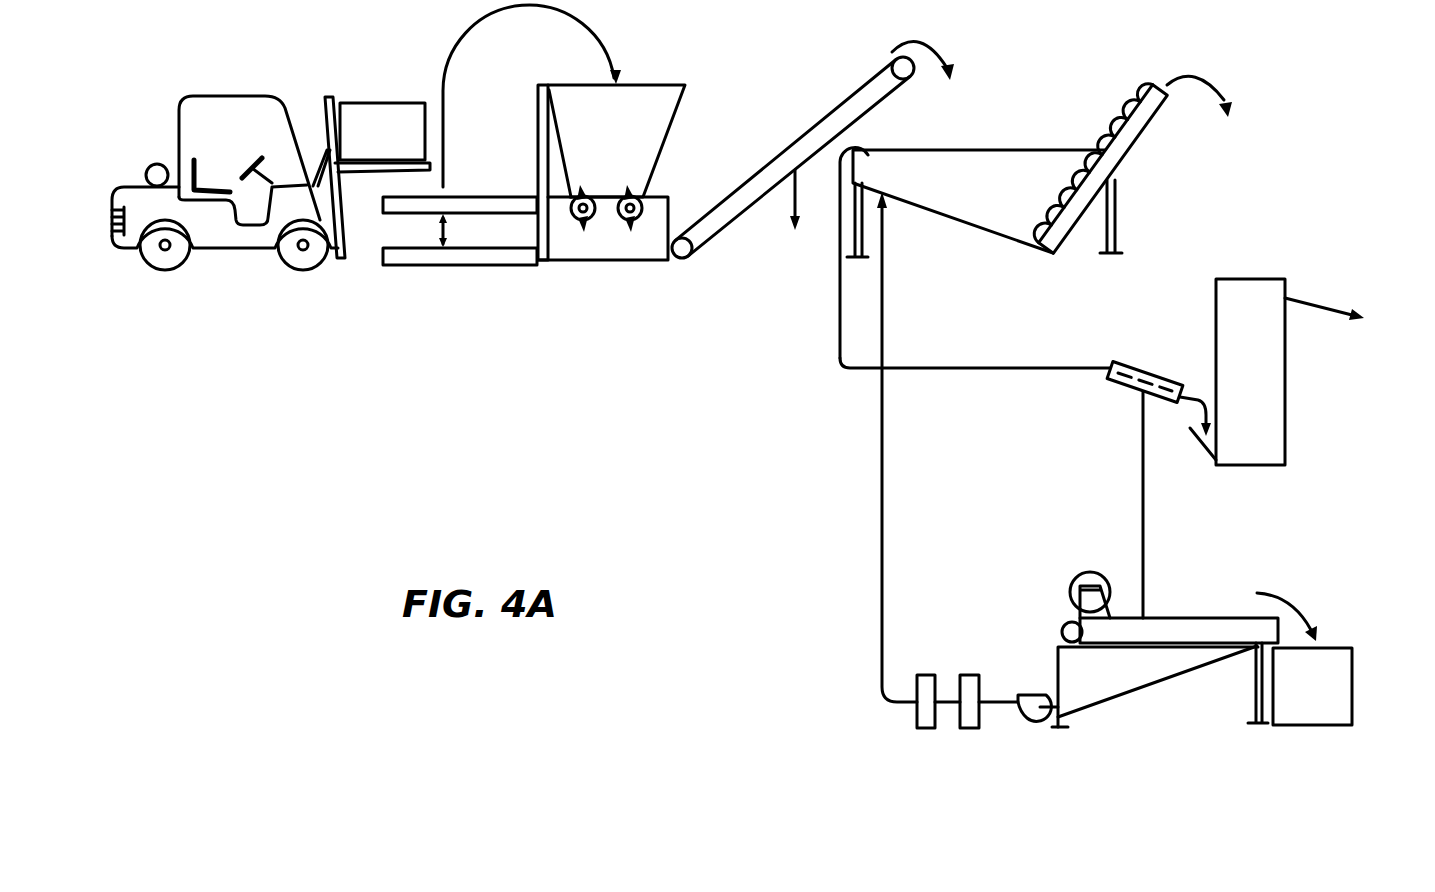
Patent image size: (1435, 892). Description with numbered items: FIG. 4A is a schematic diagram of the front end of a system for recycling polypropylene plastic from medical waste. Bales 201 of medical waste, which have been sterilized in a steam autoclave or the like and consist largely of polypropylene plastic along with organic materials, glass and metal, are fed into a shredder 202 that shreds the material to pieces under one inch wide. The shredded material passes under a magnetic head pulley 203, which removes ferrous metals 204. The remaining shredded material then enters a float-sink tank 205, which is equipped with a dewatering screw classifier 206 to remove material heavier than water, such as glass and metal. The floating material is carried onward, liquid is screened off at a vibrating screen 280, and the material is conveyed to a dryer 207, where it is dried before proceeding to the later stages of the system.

The bales 201 is at (384, 96).
The shredder 202 is at (655, 76).
The magnetic head pulley 203 is at (880, 60).
The ferrous metals 204 is at (791, 208).
The float-sink tank 205 is at (957, 148).
The dewatering screw classifier 206 is at (1156, 136).
The dryer 207 is at (1288, 386).
The vibrating screen 280 is at (1147, 355).